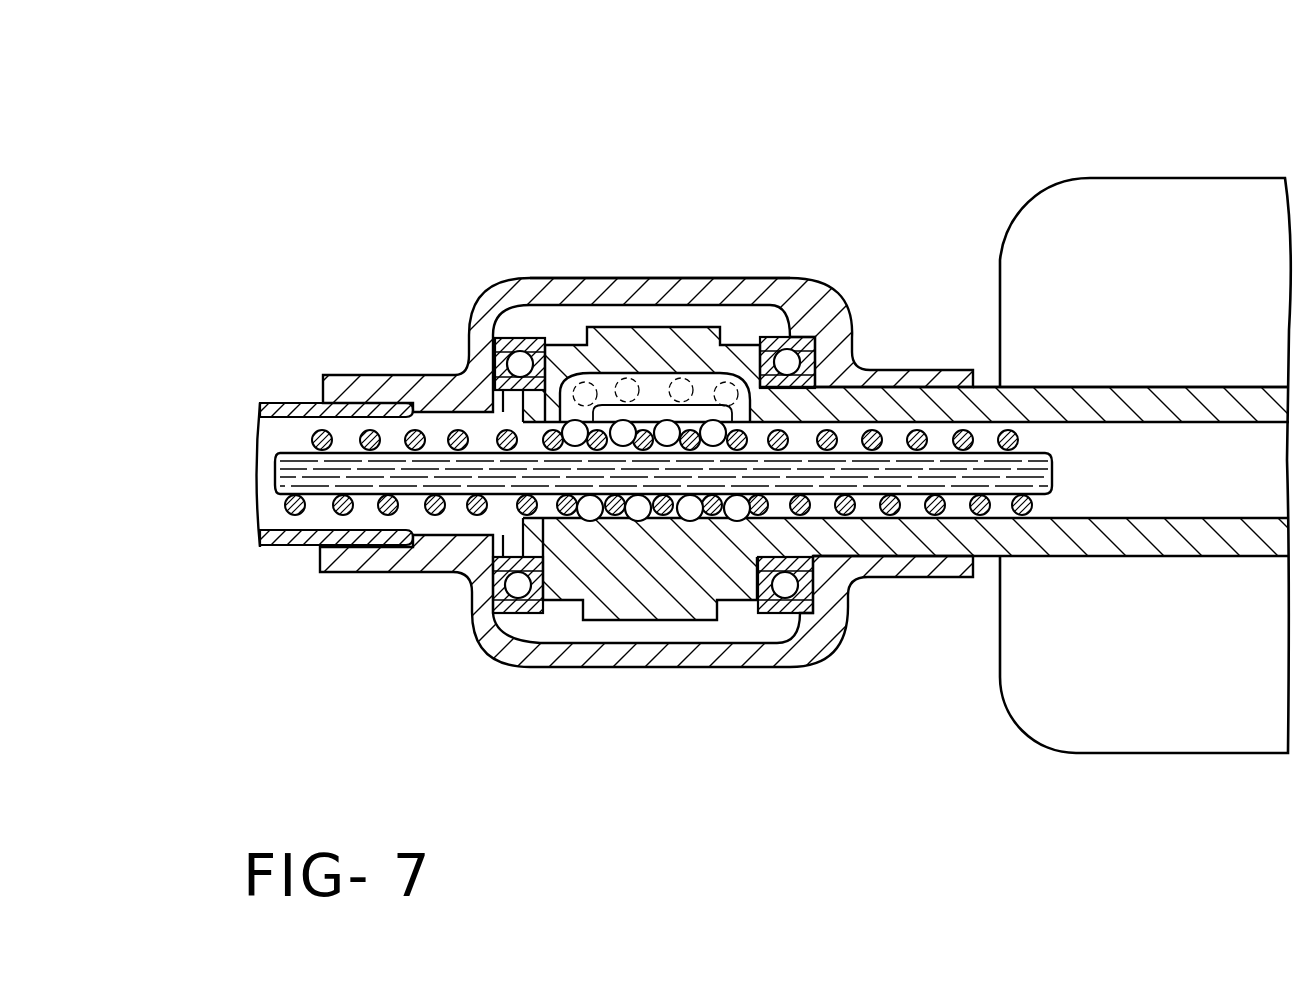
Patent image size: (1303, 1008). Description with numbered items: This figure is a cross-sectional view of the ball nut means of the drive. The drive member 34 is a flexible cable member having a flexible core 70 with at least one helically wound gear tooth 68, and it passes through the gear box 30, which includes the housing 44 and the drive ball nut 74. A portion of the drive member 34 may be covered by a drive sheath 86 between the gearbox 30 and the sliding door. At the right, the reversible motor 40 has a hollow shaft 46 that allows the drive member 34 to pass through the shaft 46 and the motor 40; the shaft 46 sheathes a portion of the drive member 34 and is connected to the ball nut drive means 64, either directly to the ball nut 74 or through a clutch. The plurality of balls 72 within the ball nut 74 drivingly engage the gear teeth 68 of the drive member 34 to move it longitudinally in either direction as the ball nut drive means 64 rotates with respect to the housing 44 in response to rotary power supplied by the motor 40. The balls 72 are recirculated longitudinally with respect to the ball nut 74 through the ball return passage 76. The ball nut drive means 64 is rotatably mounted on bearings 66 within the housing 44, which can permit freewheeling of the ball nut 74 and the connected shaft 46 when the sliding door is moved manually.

The gearbox 30 is at (800, 275).
The drive member 34 is at (258, 448).
The reversible motor 40 is at (1118, 176).
The housing 44 is at (703, 278).
The hollow shaft 46 is at (1067, 387).
The ball nut drive means 64 is at (560, 333).
The bearings 66 is at (514, 358).
The helical gear teeth 68 is at (316, 434).
The flexible core 70 is at (278, 490).
The balls 72 is at (584, 602).
The ball nut 74 is at (687, 620).
The ball return passage 76 is at (645, 390).
The drive sheath 86 is at (283, 547).